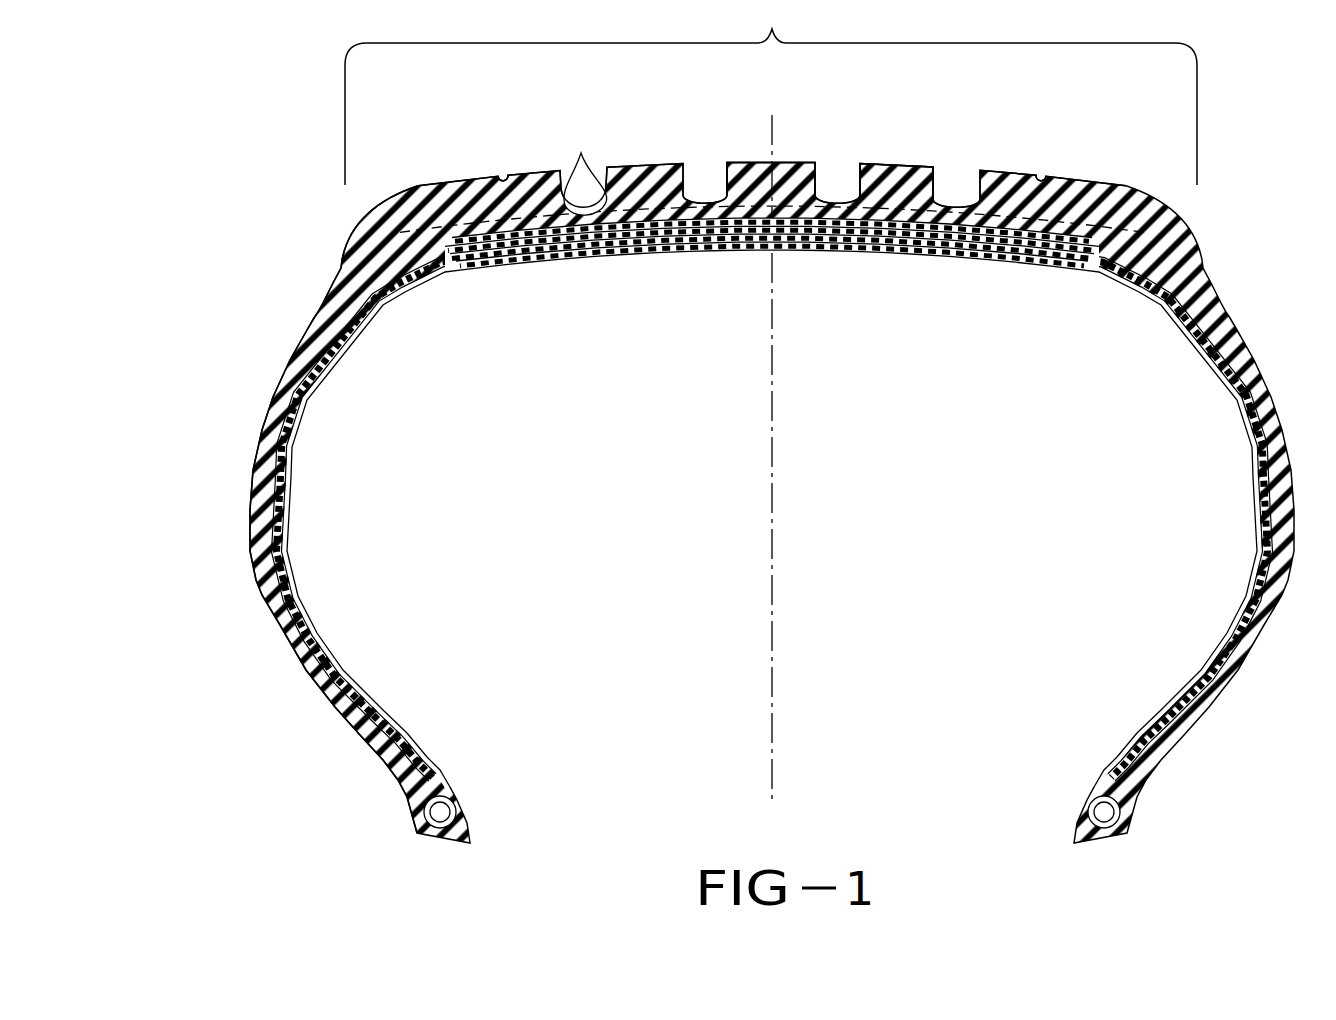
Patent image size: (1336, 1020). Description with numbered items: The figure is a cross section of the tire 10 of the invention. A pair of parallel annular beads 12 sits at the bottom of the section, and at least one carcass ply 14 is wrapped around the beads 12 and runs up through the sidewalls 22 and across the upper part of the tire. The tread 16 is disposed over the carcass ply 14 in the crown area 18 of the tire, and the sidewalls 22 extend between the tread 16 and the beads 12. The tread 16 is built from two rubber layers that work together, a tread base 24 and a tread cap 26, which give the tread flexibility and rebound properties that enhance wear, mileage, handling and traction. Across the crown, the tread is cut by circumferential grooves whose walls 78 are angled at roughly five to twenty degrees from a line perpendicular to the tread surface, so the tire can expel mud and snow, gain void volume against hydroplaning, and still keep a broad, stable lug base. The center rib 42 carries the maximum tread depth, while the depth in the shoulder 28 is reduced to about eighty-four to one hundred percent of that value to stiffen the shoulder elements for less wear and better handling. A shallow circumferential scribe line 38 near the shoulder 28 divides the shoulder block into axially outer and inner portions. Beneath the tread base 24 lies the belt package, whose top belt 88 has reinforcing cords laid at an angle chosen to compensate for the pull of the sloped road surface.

The tire 10 is at (362, 800).
The annular beads 12 is at (440, 818).
The carcass ply 14 is at (282, 622).
The tread 16 is at (805, 145).
The crown area 18 is at (1066, 44).
The sidewalls 22 is at (253, 470).
The tread base 24 is at (458, 250).
The tread cap 26 is at (877, 172).
The shoulder 28 is at (370, 224).
The circumferential scribe line 38 is at (503, 180).
The center rib 42 is at (748, 178).
The circumferential groove walls 78 is at (581, 153).
The top belt 88 is at (712, 222).